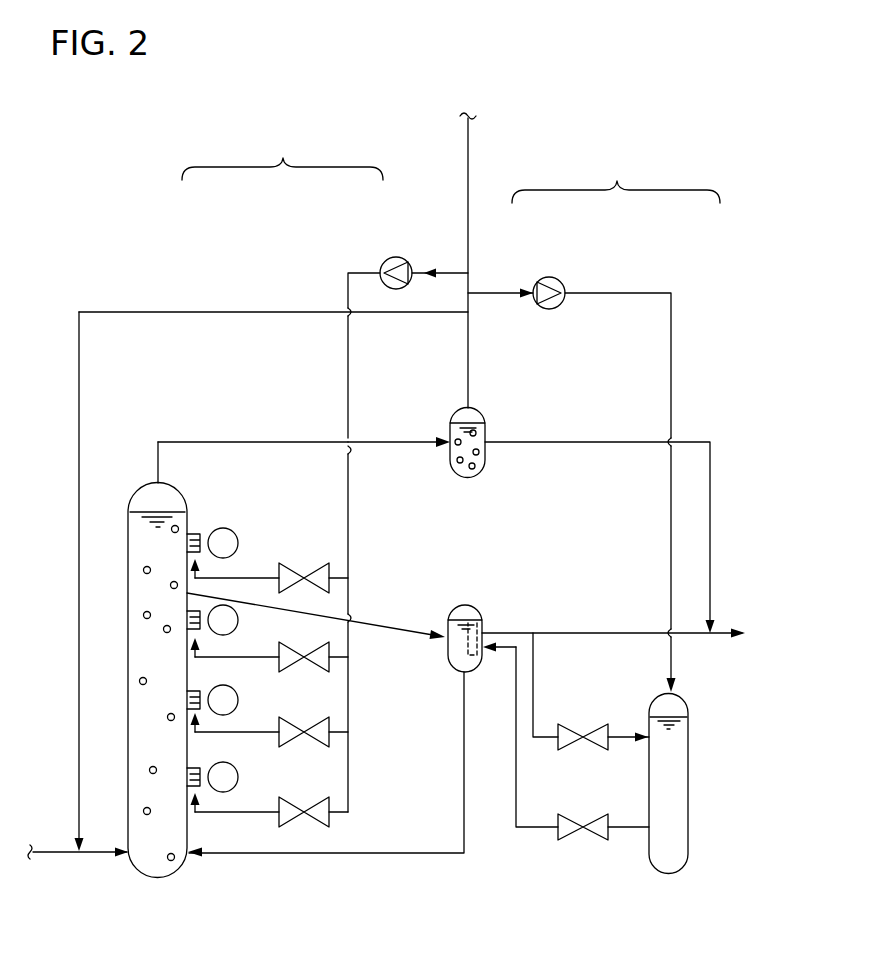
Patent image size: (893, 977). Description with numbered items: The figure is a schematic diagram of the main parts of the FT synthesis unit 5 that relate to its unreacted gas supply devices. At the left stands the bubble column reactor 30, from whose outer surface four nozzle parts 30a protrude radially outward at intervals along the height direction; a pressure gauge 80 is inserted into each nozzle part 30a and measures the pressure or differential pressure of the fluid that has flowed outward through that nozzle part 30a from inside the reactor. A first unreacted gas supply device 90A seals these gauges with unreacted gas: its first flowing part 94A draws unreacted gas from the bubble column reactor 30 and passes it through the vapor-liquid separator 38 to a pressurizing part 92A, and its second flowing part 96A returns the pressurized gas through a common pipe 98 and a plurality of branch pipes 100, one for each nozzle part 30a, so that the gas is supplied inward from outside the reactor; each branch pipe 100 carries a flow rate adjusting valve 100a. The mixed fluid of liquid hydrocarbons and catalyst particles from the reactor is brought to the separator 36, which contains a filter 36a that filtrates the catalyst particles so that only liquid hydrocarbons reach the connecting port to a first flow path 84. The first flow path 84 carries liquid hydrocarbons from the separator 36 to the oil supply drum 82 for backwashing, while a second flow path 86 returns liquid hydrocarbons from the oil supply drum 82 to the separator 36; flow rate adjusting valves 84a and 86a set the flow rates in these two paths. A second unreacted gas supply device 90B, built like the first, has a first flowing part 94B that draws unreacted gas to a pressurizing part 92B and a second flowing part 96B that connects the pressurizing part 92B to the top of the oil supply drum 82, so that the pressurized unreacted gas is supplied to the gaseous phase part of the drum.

The FT synthesis unit 5 is at (580, 127).
The bubble column reactor 30 is at (130, 866).
The nozzle part 30a is at (198, 538).
The separator 36 is at (463, 678).
The filter 36a is at (452, 660).
The vapor-liquid separator 38 is at (481, 410).
The pressure gauge 80 is at (232, 530).
The oil supply drum for backwashing 82 is at (690, 842).
The first flow path 84 is at (536, 662).
The flow rate adjusting valve 84a is at (578, 722).
The second flow path 86 is at (528, 830).
The flow rate adjusting valve 86a is at (568, 842).
The first unreacted gas supply device 90A is at (282, 153).
The second unreacted gas supply device 90B is at (616, 175).
The pressurizing part 92A is at (382, 261).
The pressurizing part 92B is at (563, 279).
The first flowing part 94A is at (218, 442).
The first flowing part 94B is at (500, 293).
The second flowing part 96A is at (346, 294).
The second flowing part 96B is at (629, 292).
The common pipe 98 is at (349, 468).
The branch pipe 100 is at (333, 573).
The flow rate adjusting valve 100a is at (290, 592).